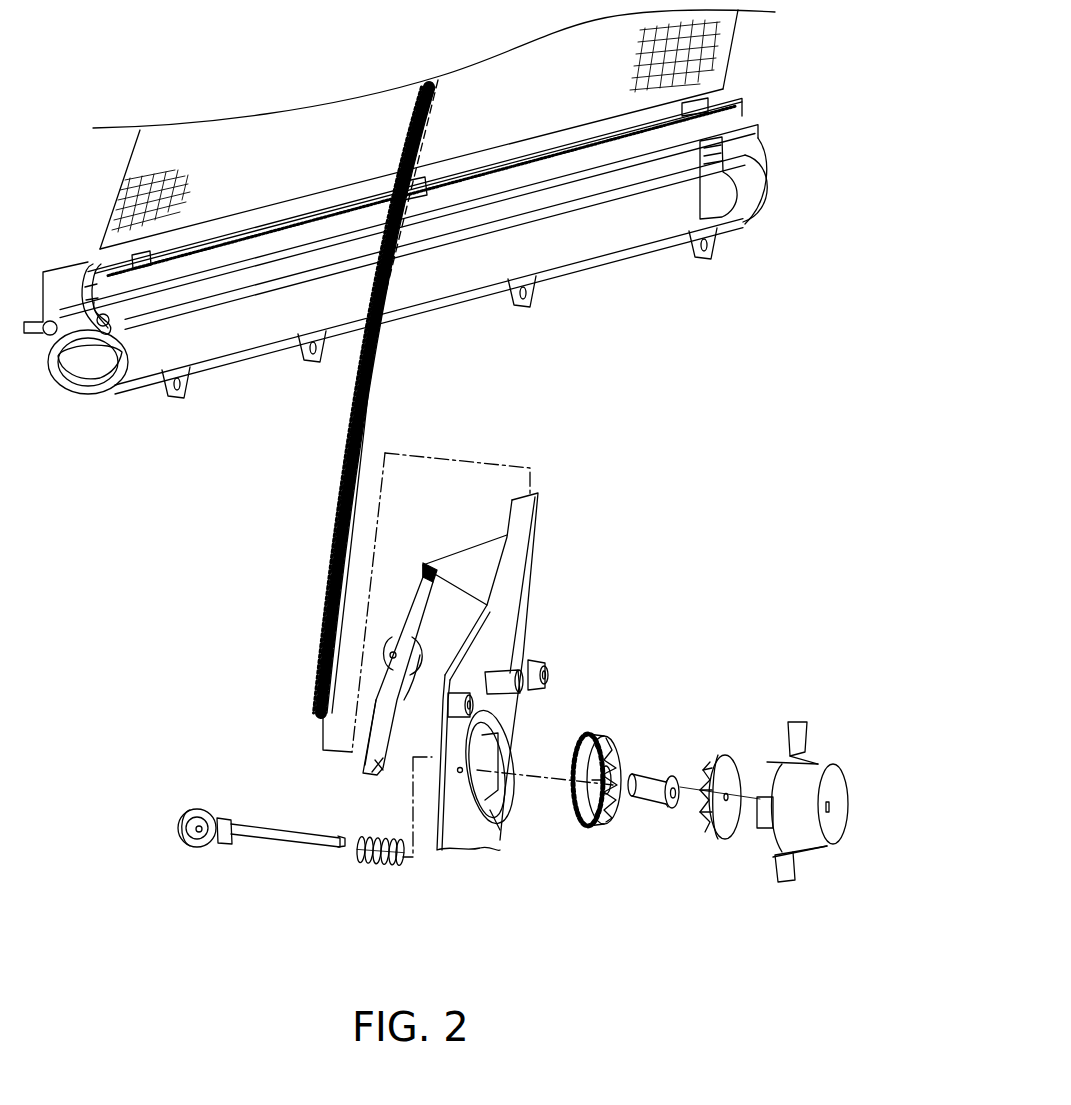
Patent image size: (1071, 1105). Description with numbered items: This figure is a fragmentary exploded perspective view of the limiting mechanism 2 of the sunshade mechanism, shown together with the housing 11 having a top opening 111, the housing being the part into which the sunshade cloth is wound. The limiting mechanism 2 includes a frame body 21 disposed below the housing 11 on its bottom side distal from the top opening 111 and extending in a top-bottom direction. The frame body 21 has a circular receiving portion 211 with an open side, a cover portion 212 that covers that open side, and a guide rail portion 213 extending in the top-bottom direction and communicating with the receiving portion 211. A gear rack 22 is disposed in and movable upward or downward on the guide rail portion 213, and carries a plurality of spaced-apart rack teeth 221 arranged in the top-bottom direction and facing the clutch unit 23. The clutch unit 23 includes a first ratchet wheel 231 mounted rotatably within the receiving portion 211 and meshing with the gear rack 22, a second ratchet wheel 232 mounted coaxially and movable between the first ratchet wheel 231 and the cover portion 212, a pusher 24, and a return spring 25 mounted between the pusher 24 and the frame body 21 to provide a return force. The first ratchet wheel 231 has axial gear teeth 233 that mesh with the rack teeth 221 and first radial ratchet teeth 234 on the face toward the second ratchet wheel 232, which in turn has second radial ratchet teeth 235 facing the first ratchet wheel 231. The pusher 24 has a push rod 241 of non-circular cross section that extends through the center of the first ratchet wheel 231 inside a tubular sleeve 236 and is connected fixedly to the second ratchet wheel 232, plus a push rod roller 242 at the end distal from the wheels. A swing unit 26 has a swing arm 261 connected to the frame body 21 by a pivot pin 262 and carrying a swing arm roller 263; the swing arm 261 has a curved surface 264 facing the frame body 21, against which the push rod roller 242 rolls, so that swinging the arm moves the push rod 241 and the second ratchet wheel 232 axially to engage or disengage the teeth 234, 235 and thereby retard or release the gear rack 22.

The limiting mechanism 2 is at (587, 557).
The housing 11 is at (153, 347).
The top opening 111 is at (93, 262).
The frame body 21 is at (447, 853).
The receiving portion 211 is at (488, 805).
The cover portion 212 is at (820, 833).
The guide rail portion 213 is at (528, 593).
The gear rack 22 is at (378, 385).
The rack teeth 221 is at (343, 493).
The clutch unit 23 is at (597, 834).
The first ratchet wheel 231 is at (583, 827).
The second ratchet wheel 232 is at (713, 833).
The axial gear teeth 233 is at (573, 777).
The first radial ratchet teeth 234 is at (593, 800).
The second radial ratchet teeth 235 is at (703, 803).
The tubular sleeve 236 is at (648, 780).
The pusher 24 is at (231, 878).
The push rod 241 is at (300, 837).
The push rod roller 242 is at (172, 823).
The return spring 25 is at (370, 866).
The swing unit 26 is at (410, 585).
The swing arm 261 is at (368, 745).
The pivot pin 262 is at (432, 570).
The swing arm roller 263 is at (386, 640).
The curved surface 264 is at (383, 763).